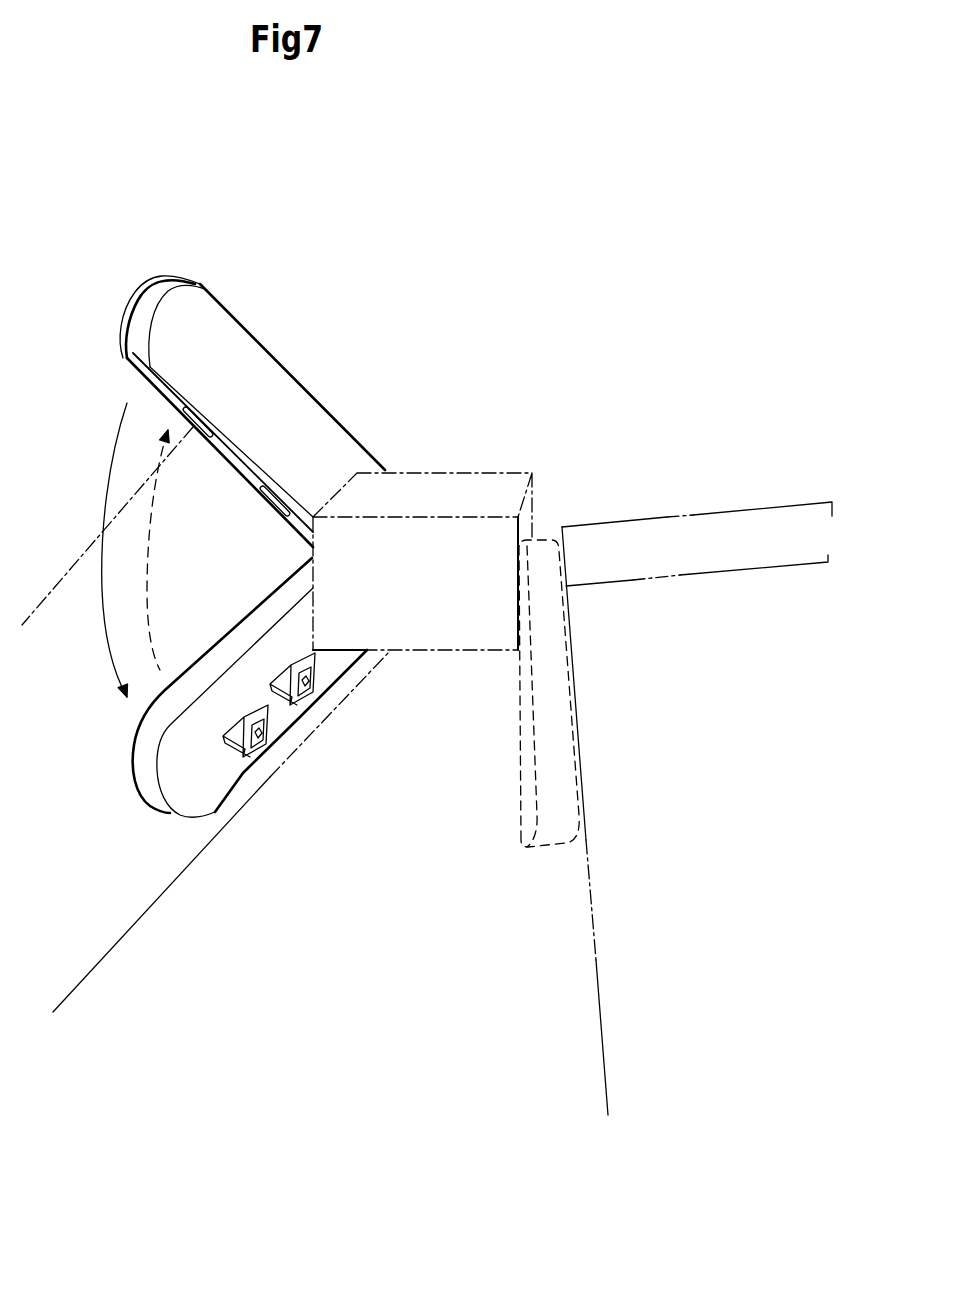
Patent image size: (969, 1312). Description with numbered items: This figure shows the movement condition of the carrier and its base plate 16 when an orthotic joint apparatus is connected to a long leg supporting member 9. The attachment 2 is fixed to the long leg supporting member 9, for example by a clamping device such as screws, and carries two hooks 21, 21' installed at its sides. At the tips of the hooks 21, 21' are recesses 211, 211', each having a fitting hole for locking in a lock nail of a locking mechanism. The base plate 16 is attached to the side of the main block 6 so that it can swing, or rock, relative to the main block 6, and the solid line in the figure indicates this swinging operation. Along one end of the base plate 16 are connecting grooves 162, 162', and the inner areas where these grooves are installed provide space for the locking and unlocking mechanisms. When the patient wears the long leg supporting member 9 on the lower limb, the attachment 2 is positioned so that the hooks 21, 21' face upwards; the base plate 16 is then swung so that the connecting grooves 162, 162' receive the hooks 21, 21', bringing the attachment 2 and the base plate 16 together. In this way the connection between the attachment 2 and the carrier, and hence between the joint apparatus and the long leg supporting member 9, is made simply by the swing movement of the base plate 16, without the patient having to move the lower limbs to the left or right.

The attachment 2 is at (149, 815).
The main block 6 is at (440, 473).
The long leg supporting member 9 is at (152, 908).
The base plate 16 is at (273, 357).
The connecting groove 162 is at (260, 530).
The connecting groove 162' is at (196, 458).
The hook 21 is at (328, 722).
The hook 21' is at (280, 783).
The recess 211 is at (342, 709).
The recess 211' is at (294, 774).